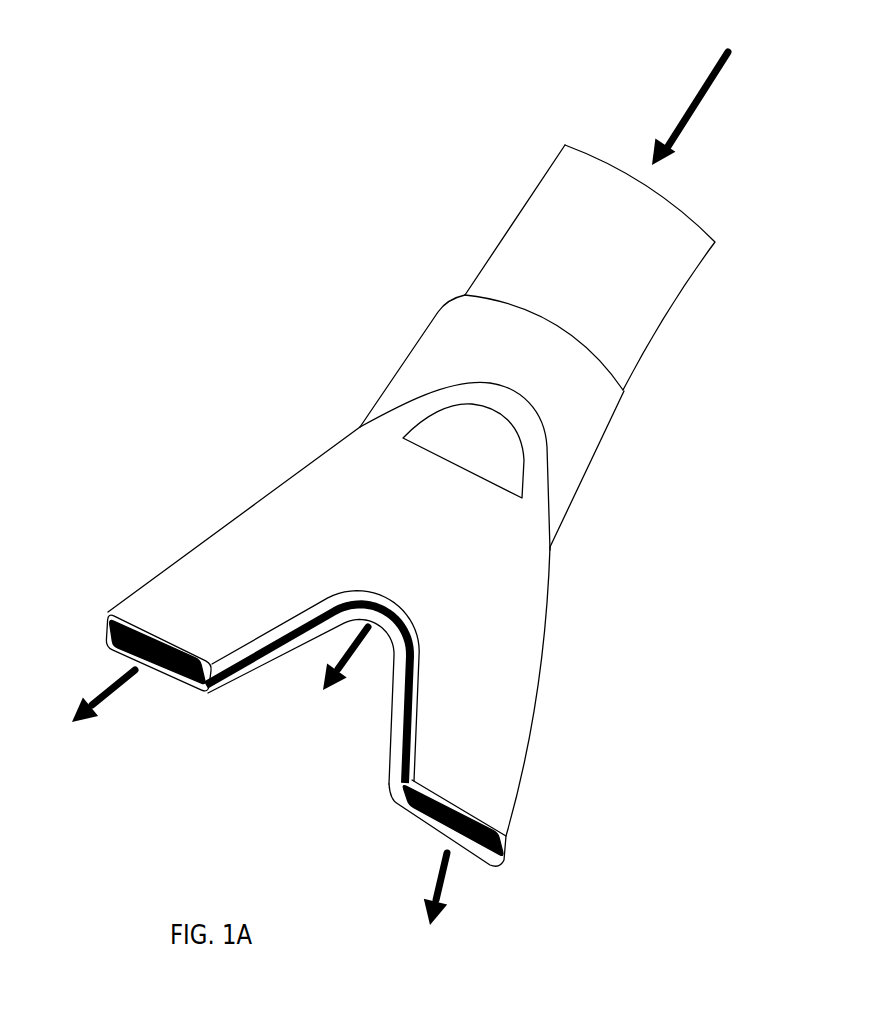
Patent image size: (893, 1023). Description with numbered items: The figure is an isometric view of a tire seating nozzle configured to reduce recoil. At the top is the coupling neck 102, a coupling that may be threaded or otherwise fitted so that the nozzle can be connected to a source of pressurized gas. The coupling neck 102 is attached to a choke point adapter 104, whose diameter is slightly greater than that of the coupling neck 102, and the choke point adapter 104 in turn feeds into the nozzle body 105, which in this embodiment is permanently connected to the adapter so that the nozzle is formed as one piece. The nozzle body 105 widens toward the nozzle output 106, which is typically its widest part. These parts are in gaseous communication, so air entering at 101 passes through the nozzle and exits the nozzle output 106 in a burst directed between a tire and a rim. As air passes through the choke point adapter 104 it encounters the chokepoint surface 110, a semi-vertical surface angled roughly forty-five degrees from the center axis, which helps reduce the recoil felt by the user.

The air entry point 101 is at (703, 108).
The coupling neck 102 is at (590, 267).
The choke point adapter 104 is at (501, 421).
The nozzle body 105 is at (368, 609).
The nozzle output 106 is at (306, 742).
The chokepoint surface 110 is at (422, 406).